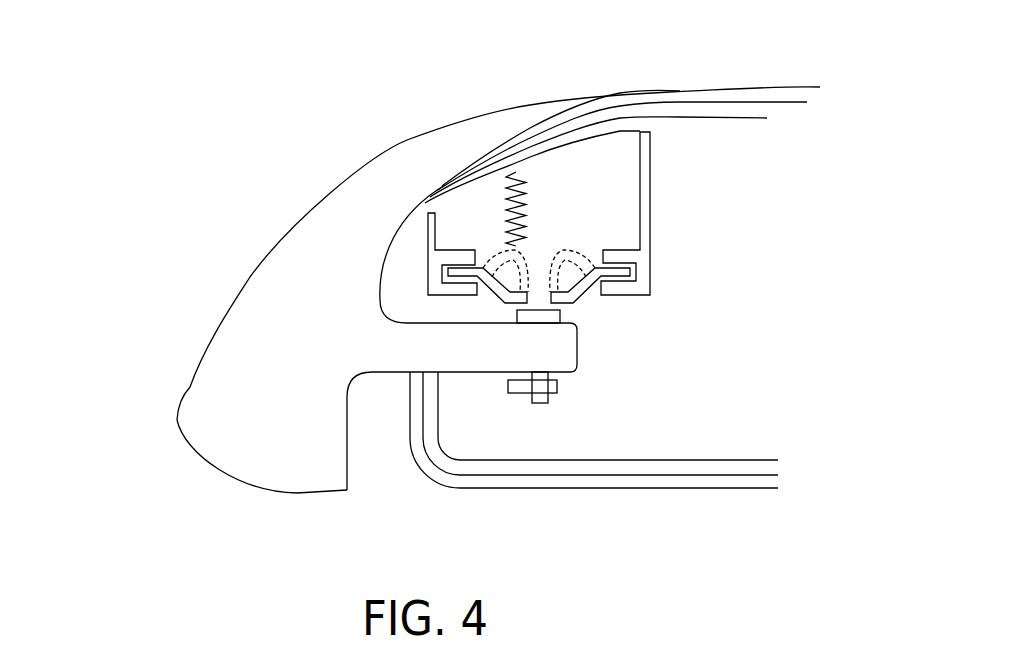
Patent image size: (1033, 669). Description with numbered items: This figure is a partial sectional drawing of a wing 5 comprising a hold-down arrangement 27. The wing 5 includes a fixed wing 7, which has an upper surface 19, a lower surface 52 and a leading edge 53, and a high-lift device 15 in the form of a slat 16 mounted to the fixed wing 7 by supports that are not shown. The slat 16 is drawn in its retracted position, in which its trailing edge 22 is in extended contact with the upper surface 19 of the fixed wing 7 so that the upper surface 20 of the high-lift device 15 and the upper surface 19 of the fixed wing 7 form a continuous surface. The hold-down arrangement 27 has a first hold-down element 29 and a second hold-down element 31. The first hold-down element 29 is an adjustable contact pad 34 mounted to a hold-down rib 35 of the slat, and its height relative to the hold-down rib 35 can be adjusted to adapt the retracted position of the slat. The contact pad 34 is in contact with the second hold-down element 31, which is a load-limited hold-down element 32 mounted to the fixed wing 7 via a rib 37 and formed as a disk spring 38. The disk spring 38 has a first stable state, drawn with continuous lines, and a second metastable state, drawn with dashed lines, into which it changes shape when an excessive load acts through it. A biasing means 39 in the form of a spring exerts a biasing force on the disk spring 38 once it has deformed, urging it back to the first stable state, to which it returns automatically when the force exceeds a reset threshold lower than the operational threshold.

The wing 5 is at (190, 138).
The fixed wing 7 is at (805, 267).
The high-lift device 15 is at (322, 339).
The slat 16 is at (240, 348).
The upper surface 19 is at (785, 86).
The upper surface 20 is at (418, 136).
The trailing edge 22 is at (622, 88).
The hold-down arrangement 27 is at (692, 337).
The first hold-down element 29 is at (614, 366).
The second hold-down element 31 is at (531, 201).
The load-limited hold-down element 32 is at (531, 201).
The contact pad 34 is at (568, 323).
The hold-down rib 35 is at (401, 358).
The rib 37 is at (652, 215).
The disk spring 38 is at (500, 250).
The biasing means 39 is at (527, 195).
The lower surface 52 is at (605, 488).
The leading edge 53 is at (405, 420).